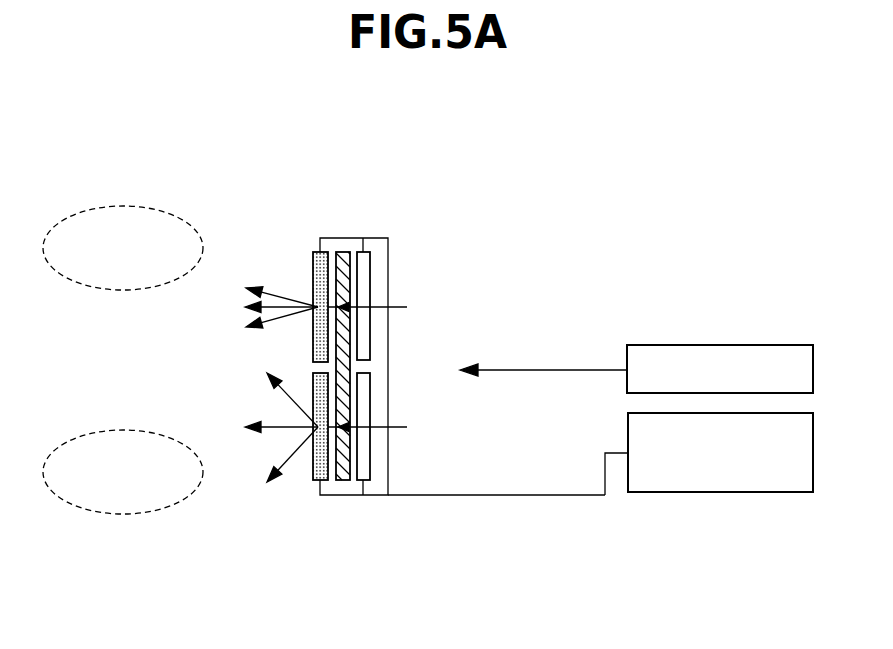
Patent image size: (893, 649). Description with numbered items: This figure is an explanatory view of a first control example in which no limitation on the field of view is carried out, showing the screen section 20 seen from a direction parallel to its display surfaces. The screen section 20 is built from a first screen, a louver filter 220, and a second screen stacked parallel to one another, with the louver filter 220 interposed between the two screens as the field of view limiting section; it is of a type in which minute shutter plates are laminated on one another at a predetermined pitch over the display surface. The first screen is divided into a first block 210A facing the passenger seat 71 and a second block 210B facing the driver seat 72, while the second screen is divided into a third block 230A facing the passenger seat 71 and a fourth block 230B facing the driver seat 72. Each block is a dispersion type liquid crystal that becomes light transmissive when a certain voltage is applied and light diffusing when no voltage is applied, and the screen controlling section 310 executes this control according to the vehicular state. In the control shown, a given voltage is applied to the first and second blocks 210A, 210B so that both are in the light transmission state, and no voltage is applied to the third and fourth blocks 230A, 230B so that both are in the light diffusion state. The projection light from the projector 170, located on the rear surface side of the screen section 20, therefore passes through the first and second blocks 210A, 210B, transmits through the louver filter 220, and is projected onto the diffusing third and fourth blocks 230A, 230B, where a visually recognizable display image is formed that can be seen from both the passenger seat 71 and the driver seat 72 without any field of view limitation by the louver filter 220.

The screen section 20 is at (441, 347).
The passenger seat 71 is at (123, 237).
The driver seat 72 is at (123, 461).
The projector 170 is at (717, 345).
The screen controlling section 310 is at (723, 492).
The louver filter 220 is at (343, 251).
The third block 230A is at (318, 251).
The fourth block 230B is at (316, 478).
The first block 210A is at (371, 264).
The second block 210B is at (373, 470).